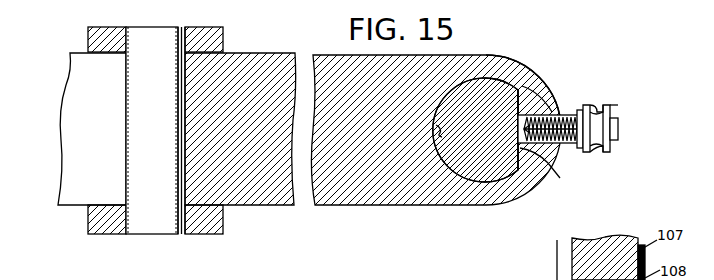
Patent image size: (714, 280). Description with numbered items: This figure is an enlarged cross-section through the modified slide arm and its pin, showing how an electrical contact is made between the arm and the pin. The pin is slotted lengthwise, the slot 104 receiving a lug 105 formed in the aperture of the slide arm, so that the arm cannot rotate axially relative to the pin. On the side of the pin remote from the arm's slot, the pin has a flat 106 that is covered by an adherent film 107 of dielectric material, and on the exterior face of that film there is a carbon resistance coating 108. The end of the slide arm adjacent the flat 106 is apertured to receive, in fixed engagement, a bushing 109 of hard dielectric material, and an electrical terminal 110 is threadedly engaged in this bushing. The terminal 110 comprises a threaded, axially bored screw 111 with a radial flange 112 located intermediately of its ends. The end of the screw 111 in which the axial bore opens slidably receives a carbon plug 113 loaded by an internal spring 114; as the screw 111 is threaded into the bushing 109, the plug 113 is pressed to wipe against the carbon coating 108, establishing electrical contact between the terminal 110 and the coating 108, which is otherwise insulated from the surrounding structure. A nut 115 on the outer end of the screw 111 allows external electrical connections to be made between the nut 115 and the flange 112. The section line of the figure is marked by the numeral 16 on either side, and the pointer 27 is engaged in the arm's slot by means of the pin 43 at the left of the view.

The pointer 27 is at (89, 36).
The pin 43 is at (146, 33).
The section line 16 is at (350, 137).
The slot 104 is at (440, 125).
The lug 105 is at (437, 133).
The flat 106 is at (532, 92).
The adherent film of dielectric material 107 is at (533, 178).
The carbon resistance coating 108 is at (552, 113).
The bushing 109 is at (588, 126).
The electrical terminal 110 is at (616, 159).
The screw 111 is at (616, 104).
The radial flange 112 is at (592, 152).
The carbon plug 113 is at (546, 160).
The internal spring 114 is at (580, 150).
The nut 115 is at (617, 119).